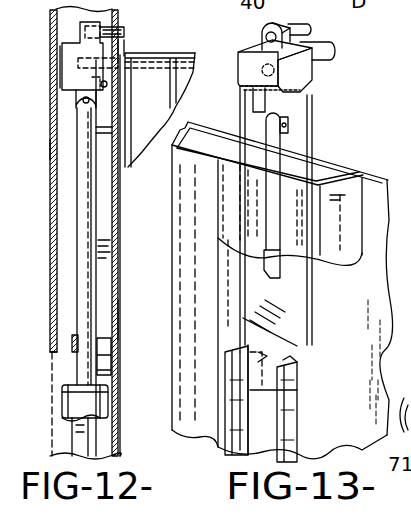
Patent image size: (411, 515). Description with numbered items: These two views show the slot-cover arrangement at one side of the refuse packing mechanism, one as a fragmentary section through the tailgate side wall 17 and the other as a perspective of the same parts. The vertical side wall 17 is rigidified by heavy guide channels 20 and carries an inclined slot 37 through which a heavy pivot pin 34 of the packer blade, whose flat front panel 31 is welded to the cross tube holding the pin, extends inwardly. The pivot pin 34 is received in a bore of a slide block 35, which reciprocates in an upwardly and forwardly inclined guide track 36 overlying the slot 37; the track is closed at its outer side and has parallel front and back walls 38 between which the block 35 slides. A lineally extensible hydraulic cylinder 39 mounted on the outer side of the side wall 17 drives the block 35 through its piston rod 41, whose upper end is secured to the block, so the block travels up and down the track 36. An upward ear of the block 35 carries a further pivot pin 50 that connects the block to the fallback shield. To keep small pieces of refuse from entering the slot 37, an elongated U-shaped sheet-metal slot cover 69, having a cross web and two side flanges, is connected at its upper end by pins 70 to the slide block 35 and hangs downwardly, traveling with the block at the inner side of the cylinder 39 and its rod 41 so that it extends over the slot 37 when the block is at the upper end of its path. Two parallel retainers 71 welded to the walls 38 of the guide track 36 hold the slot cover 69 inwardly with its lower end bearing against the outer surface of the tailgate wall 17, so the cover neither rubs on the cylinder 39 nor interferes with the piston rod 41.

In FIG. 12, the side wall 17 is at (119, 392).
In FIG. 13, the side wall 17 is at (350, 353).
In FIG. 12, the guide channel 20 is at (56, 434).
In FIG. 13, the guide channel 20 is at (342, 170).
In FIG. 12, the front panel 31 is at (148, 120).
In FIG. 12, the pivot pin 34 is at (115, 60).
In FIG. 13, the pivot pin 34 is at (331, 60).
In FIG. 12, the slide block 35 is at (68, 93).
In FIG. 13, the slide block 35 is at (312, 85).
In FIG. 12, the guide track 36 is at (46, 151).
In FIG. 13, the guide track 36 is at (229, 251).
In FIG. 12, the slot 37 is at (126, 320).
In FIG. 13, the slot 37 is at (243, 343).
In FIG. 12, the front and back walls 38 is at (51, 183).
In FIG. 13, the front and back walls 38 is at (223, 220).
In FIG. 12, the hydraulic cylinder 39 is at (63, 400).
In FIG. 12, the piston rod 41 is at (77, 210).
In FIG. 13, the piston rod 41 is at (281, 145).
In FIG. 12, the pivot pin 50 is at (118, 30).
In FIG. 13, the pivot pin 50 is at (315, 33).
In FIG. 12, the slot cover 69 is at (110, 240).
In FIG. 13, the slot cover 69 is at (280, 314).
In FIG. 12, the pin 70 is at (107, 84).
In FIG. 13, the pin 70 is at (305, 108).
In FIG. 12, the retainer 71 is at (90, 443).
In FIG. 13, the retainer 71 is at (278, 462).